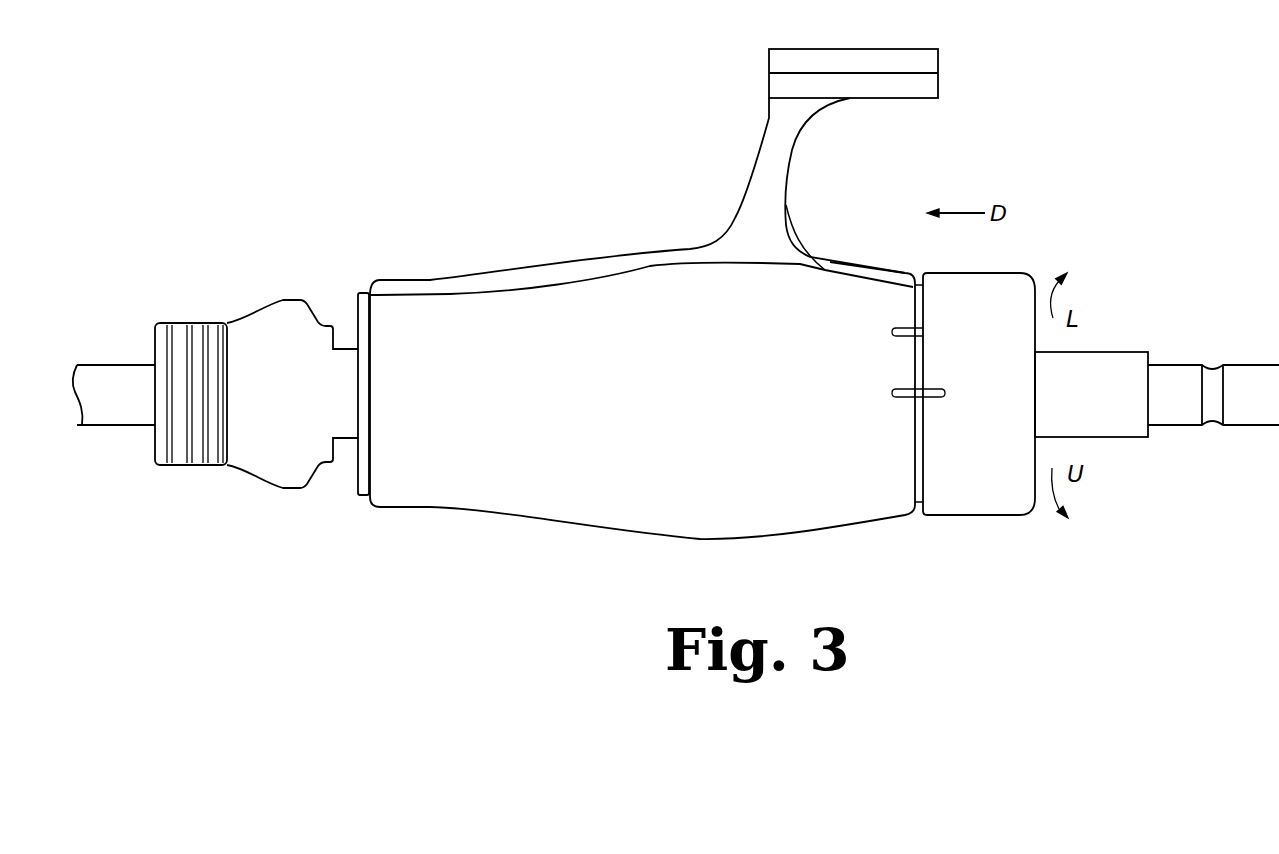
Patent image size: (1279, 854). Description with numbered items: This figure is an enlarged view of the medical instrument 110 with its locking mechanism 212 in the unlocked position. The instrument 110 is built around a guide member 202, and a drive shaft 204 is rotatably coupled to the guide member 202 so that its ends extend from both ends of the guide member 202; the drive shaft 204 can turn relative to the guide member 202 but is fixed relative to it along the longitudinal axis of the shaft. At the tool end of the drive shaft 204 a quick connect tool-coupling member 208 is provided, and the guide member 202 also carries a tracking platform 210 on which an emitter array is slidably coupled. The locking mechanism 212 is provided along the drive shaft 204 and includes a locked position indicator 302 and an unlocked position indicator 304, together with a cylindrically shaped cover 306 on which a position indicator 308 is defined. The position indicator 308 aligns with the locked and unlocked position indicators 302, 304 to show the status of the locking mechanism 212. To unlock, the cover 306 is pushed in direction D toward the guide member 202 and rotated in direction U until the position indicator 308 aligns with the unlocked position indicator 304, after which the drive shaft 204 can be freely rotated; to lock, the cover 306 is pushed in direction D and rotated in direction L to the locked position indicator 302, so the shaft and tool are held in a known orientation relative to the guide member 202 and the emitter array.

The instrument 110 is at (1055, 87).
The guide member 202 is at (627, 502).
The drive shaft 204 is at (1168, 473).
The quick connect tool-coupling member 208 is at (266, 337).
The tracking platform 210 is at (781, 108).
The locking mechanism 212 is at (936, 567).
The locked position indicator 302 is at (864, 302).
The unlocked position indicator 304 is at (852, 420).
The cylindrically shaped cover 306 is at (977, 284).
The position indicator 308 is at (943, 393).